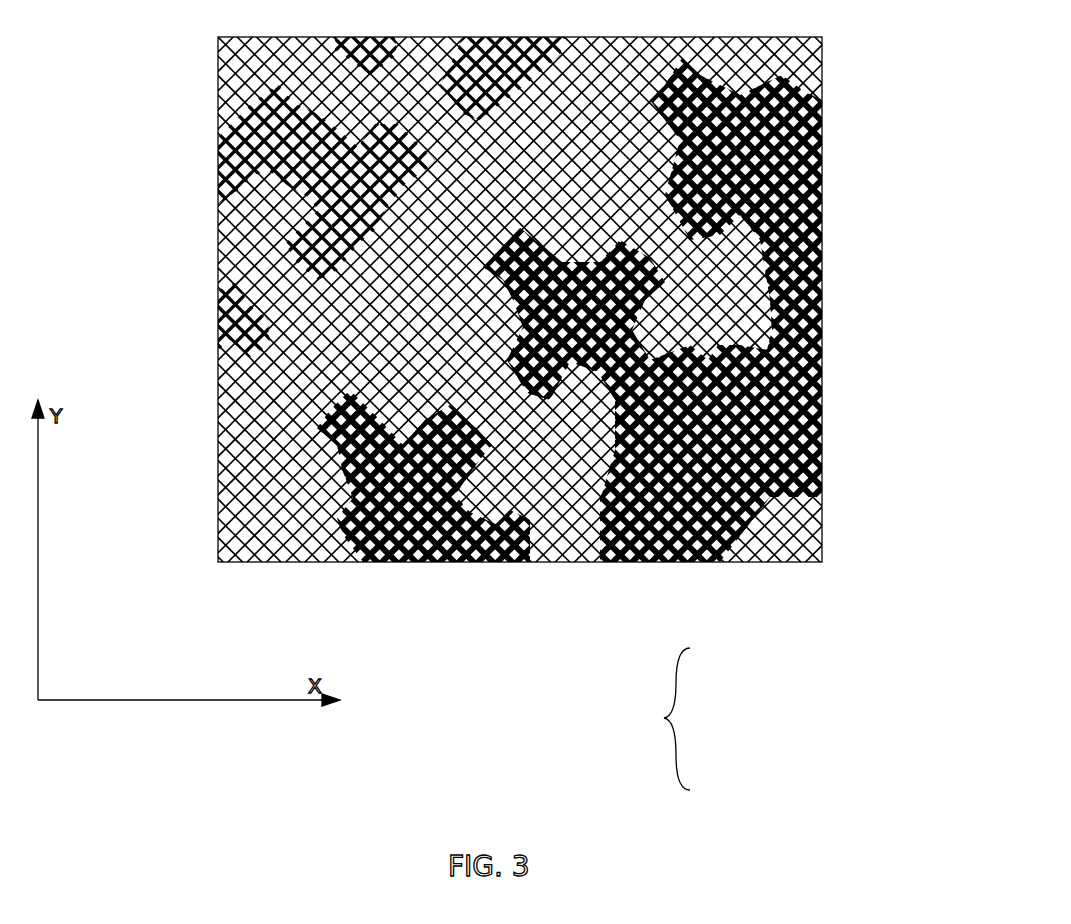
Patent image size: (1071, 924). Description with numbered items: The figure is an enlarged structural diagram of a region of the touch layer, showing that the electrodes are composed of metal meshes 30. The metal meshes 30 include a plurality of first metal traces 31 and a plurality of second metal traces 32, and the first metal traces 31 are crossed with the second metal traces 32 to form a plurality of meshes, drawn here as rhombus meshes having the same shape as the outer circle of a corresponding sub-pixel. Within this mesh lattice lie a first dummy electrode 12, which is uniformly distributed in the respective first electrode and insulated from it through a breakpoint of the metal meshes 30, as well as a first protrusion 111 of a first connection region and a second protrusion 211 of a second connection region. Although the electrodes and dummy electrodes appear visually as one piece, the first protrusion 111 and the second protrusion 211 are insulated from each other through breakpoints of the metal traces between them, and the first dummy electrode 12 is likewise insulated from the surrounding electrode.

The first dummy electrode 12 is at (250, 160).
The second protrusion 211 is at (790, 135).
The first metal traces 31 is at (242, 432).
The second metal traces 32 is at (287, 505).
The first protrusion 111 is at (532, 455).
The metal meshes 30 is at (673, 720).